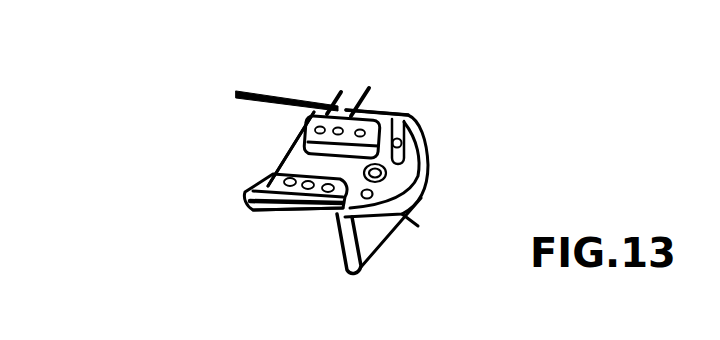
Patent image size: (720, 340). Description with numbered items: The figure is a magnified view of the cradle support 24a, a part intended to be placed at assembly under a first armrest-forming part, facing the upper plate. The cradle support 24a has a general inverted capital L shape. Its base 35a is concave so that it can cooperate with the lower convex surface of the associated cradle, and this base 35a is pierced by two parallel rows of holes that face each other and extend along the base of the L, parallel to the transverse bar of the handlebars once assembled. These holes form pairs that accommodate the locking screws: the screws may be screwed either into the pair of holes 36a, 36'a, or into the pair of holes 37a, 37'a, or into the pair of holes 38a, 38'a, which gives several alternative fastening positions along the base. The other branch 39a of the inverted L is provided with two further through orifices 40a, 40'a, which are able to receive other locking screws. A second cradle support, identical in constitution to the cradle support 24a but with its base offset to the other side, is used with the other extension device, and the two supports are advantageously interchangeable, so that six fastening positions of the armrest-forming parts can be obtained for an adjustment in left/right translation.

The cradle support 24a is at (145, 96).
The base 35a is at (292, 143).
The hole 36'a is at (337, 97).
The hole 37'a is at (377, 84).
The hole 38'a is at (417, 93).
The through orifice 40'a is at (466, 140).
The through orifice 40a is at (373, 192).
The hole 36a is at (251, 191).
The hole 37a is at (300, 217).
The hole 38a is at (336, 228).
The other branch 39a is at (383, 243).